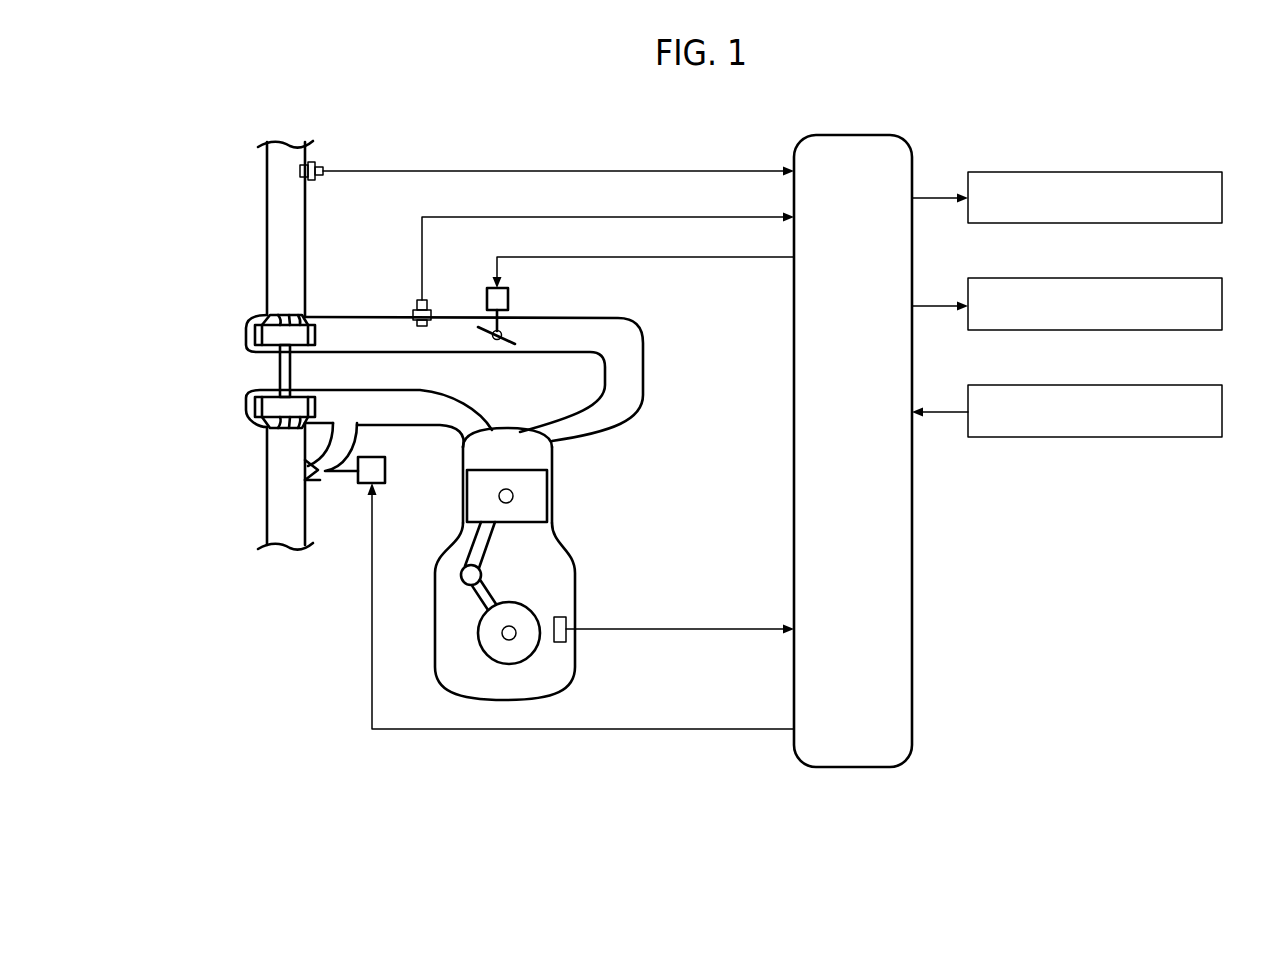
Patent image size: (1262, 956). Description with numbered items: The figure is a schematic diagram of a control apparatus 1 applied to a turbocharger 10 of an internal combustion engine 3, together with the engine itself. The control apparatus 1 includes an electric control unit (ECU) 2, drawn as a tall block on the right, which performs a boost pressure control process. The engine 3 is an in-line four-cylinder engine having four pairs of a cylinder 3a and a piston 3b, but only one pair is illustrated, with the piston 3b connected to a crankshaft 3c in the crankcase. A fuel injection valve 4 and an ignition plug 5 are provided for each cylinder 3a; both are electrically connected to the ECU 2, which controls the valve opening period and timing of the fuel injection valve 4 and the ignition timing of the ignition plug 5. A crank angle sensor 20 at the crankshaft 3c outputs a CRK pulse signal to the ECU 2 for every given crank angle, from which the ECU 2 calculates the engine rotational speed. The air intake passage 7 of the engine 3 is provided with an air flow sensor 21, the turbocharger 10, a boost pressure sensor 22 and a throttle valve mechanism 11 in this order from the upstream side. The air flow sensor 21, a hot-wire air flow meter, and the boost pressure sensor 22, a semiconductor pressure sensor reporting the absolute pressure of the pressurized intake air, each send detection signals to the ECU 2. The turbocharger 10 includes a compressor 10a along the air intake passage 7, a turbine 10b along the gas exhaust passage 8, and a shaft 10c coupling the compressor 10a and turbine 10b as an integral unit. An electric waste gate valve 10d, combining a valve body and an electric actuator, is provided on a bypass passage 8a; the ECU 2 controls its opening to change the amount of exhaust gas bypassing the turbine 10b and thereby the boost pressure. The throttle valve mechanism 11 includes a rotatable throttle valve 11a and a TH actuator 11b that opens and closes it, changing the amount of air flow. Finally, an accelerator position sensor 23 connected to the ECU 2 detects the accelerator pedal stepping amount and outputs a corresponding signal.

The control apparatus 1 is at (1090, 104).
The electric control unit (ECU) 2 is at (870, 135).
The internal combustion engine 3 is at (509, 572).
The cylinder 3a is at (547, 459).
The piston 3b is at (547, 498).
The crankshaft 3c is at (513, 636).
The fuel injection valve 4 is at (1155, 172).
The ignition plug 5 is at (1155, 278).
The air intake passage 7 is at (267, 250).
The gas exhaust passage 8 is at (357, 456).
The bypass passage 8a is at (348, 442).
The turbocharger 10 is at (245, 363).
The compressor 10a is at (285, 330).
The turbine 10b is at (250, 412).
The shaft 10c is at (280, 368).
The electric waste gate valve 10d is at (378, 485).
The throttle valve mechanism 11 is at (636, 329).
The throttle valve 11a is at (503, 340).
The TH actuator 11b is at (640, 283).
The crank angle sensor 20 is at (560, 615).
The air flow sensor 21 is at (319, 161).
The boost pressure sensor 22 is at (428, 300).
The accelerator position sensor 23 is at (1155, 385).